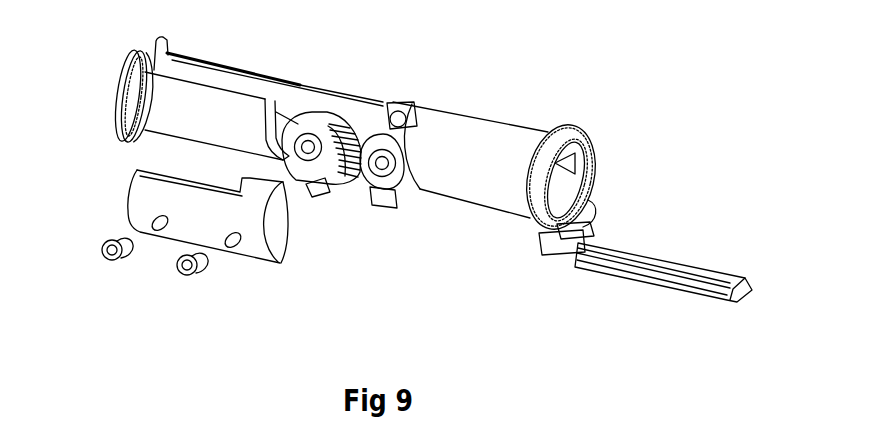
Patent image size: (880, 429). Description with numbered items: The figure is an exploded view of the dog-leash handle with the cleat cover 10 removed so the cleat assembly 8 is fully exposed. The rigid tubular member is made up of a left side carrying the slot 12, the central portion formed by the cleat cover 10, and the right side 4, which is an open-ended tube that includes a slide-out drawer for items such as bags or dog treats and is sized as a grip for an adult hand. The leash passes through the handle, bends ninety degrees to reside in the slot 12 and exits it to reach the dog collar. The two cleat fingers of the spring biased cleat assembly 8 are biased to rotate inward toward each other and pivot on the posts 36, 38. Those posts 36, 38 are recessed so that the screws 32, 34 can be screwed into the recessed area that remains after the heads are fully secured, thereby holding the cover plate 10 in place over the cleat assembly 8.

The right side 4 is at (515, 89).
The cleat assembly 8 is at (377, 228).
The cleat cover 10 is at (140, 197).
The slot 12 is at (215, 82).
The screw 32 is at (113, 267).
The screw 34 is at (180, 275).
The post 36 is at (308, 147).
The post 38 is at (382, 163).